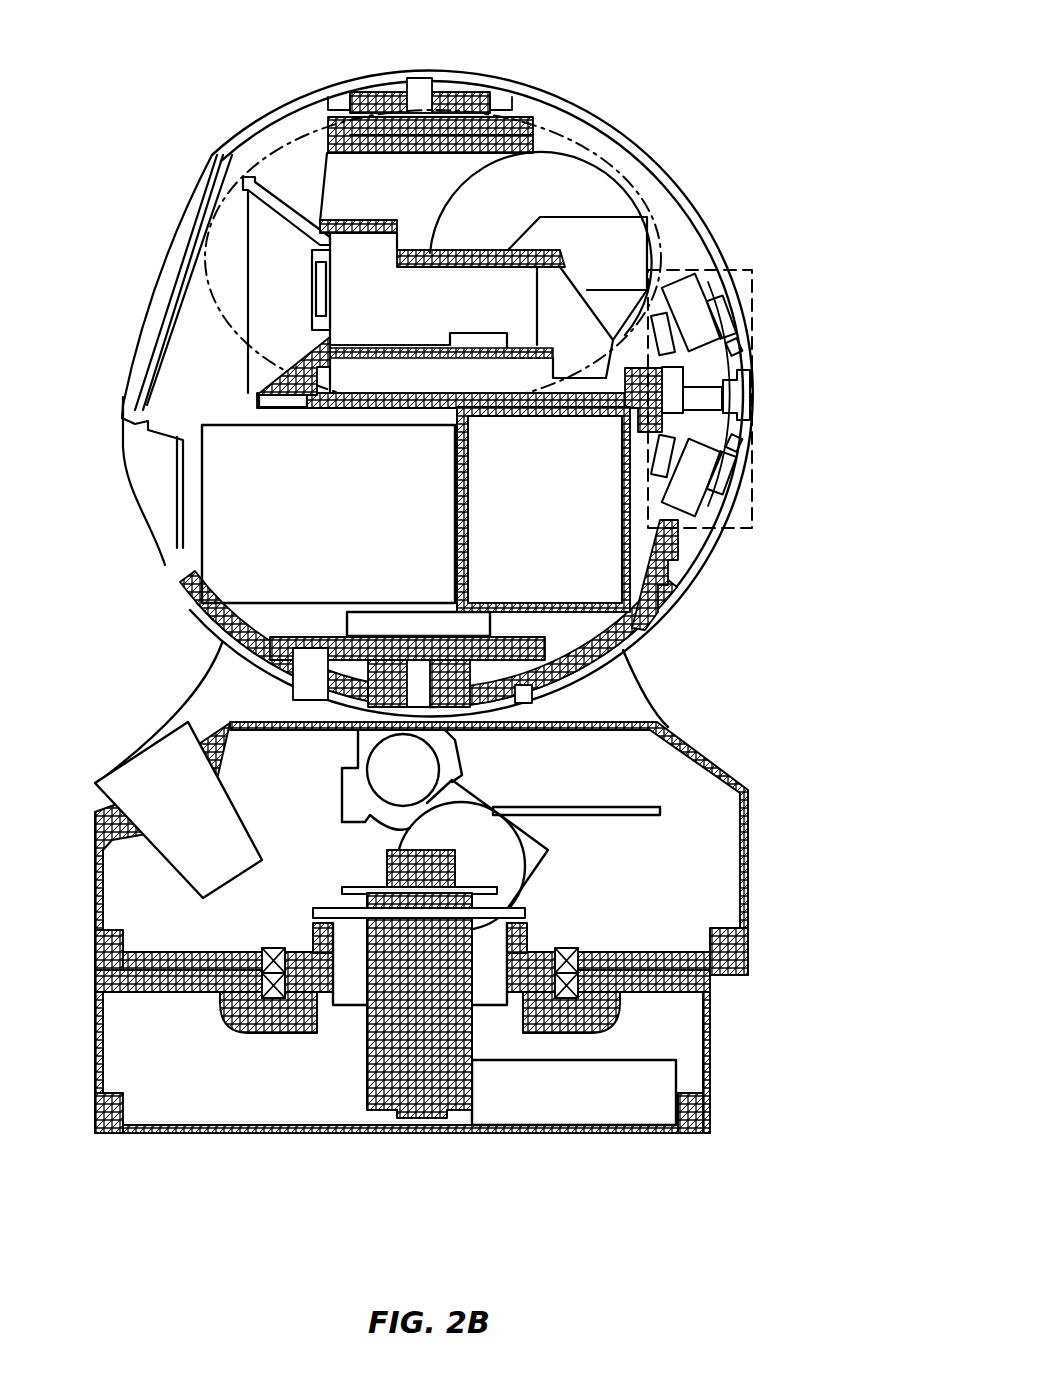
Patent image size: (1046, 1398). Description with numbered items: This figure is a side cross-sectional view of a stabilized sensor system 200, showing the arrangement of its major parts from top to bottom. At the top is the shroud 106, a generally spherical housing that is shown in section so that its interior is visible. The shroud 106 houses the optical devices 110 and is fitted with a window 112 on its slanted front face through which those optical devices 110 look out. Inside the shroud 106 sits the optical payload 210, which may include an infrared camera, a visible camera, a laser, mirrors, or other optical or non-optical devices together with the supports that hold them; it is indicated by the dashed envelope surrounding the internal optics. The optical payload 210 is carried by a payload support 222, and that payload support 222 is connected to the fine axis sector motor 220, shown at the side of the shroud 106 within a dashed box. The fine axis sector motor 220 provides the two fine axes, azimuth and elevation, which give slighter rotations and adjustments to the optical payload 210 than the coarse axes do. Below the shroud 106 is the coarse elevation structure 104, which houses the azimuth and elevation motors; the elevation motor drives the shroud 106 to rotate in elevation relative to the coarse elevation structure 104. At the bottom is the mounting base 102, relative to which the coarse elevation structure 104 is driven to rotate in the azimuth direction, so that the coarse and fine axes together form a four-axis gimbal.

The stabilized sensor system 200 is at (801, 45).
The shroud 106 is at (583, 117).
The optical payload 210 is at (272, 118).
The optical device 110 is at (262, 216).
The window 112 is at (147, 323).
The fine axis sector motor 220 is at (743, 268).
The payload support 222 is at (310, 400).
The coarse elevation structure 104 is at (725, 768).
The mounting base 102 is at (708, 1057).